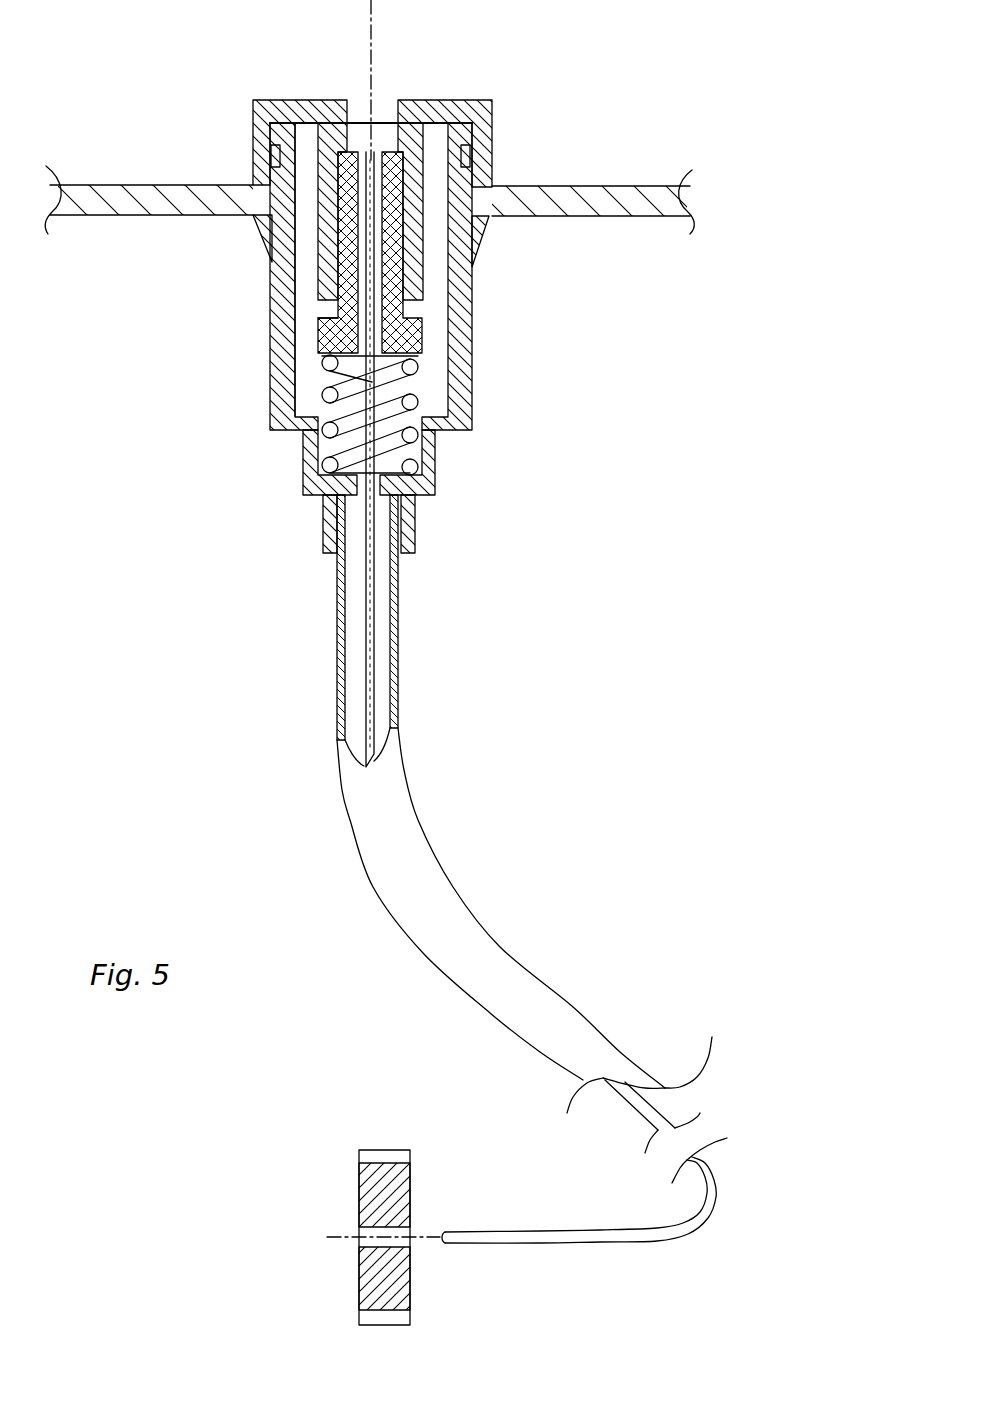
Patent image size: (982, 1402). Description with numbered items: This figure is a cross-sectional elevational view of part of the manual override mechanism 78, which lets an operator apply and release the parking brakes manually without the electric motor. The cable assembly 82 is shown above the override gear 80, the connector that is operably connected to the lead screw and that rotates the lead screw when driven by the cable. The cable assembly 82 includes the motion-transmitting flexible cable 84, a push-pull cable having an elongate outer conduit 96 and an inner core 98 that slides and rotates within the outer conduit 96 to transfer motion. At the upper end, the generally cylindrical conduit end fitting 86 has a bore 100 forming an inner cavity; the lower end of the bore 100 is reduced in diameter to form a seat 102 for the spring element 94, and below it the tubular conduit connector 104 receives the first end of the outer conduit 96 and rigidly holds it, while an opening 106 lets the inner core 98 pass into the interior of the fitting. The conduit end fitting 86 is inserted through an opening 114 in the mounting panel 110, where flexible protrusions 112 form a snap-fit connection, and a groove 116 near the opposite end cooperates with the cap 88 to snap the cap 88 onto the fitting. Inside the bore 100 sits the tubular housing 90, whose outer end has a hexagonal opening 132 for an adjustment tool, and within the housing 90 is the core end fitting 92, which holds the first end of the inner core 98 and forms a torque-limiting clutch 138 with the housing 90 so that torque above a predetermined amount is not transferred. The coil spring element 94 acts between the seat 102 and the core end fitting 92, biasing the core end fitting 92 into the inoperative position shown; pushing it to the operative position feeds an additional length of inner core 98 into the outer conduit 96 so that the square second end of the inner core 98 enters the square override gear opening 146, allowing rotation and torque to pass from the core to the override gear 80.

The manual override mechanism 78 is at (608, 558).
The override gear 80 is at (360, 1200).
The cable assembly 82 is at (489, 923).
The flexible cable 84 is at (427, 838).
The conduit end fitting 86 is at (470, 380).
The cap 88 is at (492, 122).
The housing 90 is at (400, 260).
The core end fitting 92 is at (403, 284).
The spring element 94 is at (437, 463).
The outer conduit 96 is at (588, 1024).
The inner core 98 is at (373, 666).
The bore 100 is at (297, 262).
The seat 102 is at (323, 449).
The conduit connector 104 is at (323, 528).
The opening 106 is at (378, 494).
The mounting panel 110 is at (608, 216).
The flexible protrusions 112 is at (260, 234).
The opening 114 is at (383, 103).
The groove 116 is at (465, 162).
The opening 132 is at (292, 136).
The torque-limiting clutch 138 is at (316, 341).
The override gear opening 146 is at (370, 1243).